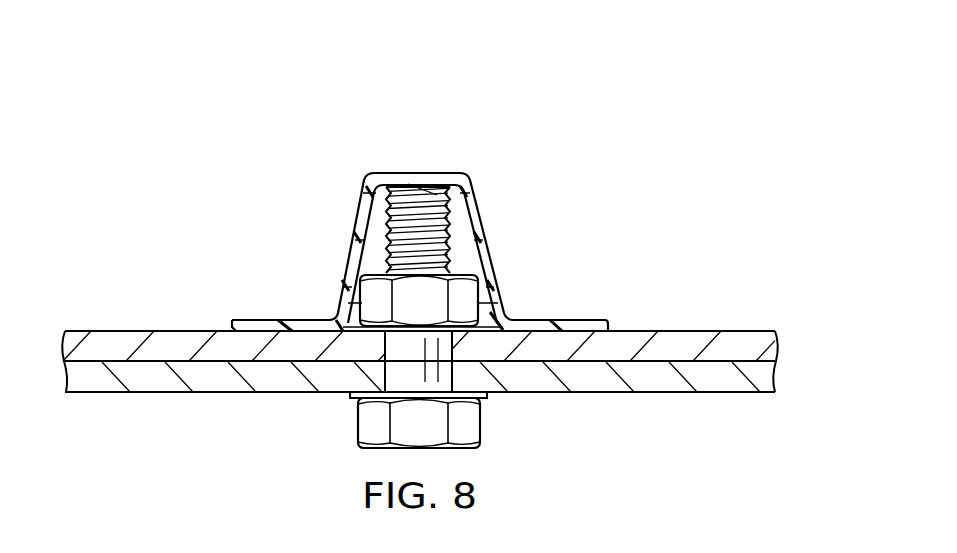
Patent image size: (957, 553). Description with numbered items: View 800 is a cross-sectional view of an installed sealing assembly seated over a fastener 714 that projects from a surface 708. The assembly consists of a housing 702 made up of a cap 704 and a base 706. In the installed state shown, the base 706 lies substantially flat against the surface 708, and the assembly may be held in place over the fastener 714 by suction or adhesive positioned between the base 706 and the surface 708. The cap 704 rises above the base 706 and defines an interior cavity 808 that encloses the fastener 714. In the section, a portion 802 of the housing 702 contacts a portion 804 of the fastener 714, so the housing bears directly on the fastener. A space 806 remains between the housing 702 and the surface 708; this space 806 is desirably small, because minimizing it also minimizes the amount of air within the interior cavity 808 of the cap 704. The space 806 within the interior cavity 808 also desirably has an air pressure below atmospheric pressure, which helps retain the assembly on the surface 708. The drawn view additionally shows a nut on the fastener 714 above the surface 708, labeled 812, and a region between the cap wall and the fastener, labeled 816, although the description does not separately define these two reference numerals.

The view 800 is at (258, 72).
The housing 702 is at (353, 171).
The cap 704 is at (357, 209).
The base 706 is at (593, 316).
The surface 708 is at (177, 340).
The fastener 714 is at (378, 255).
The portion of housing 802 is at (475, 188).
The portion of fastener 804 is at (400, 185).
The space 806 is at (372, 245).
The interior cavity 808 is at (470, 260).
The upper nut 812 is at (437, 172).
The clearance region 816 is at (460, 217).